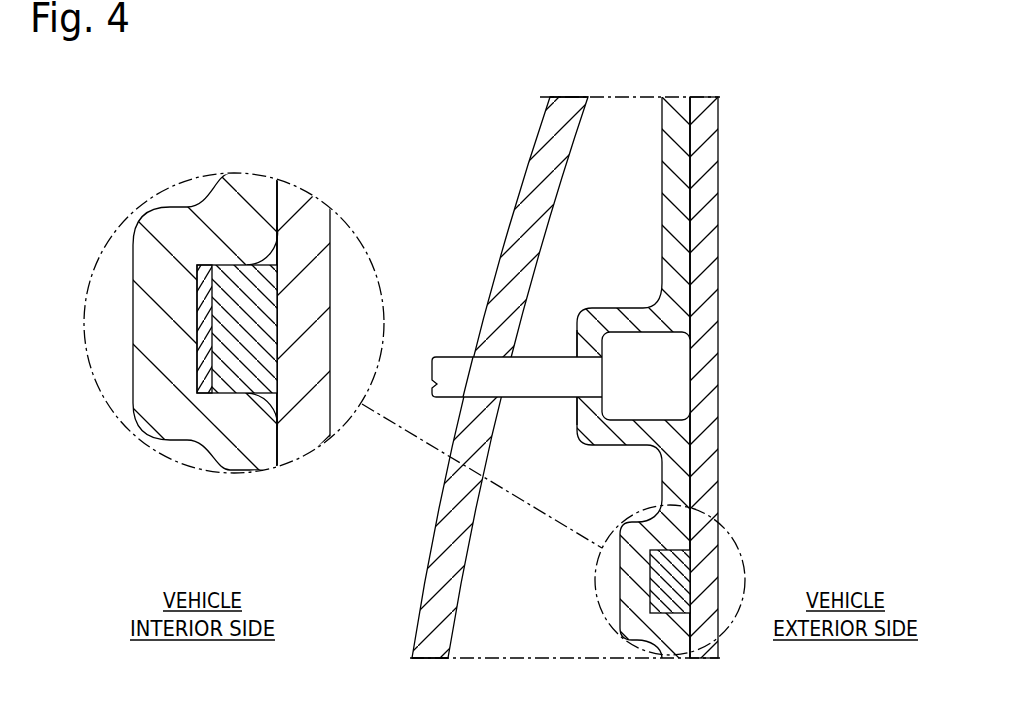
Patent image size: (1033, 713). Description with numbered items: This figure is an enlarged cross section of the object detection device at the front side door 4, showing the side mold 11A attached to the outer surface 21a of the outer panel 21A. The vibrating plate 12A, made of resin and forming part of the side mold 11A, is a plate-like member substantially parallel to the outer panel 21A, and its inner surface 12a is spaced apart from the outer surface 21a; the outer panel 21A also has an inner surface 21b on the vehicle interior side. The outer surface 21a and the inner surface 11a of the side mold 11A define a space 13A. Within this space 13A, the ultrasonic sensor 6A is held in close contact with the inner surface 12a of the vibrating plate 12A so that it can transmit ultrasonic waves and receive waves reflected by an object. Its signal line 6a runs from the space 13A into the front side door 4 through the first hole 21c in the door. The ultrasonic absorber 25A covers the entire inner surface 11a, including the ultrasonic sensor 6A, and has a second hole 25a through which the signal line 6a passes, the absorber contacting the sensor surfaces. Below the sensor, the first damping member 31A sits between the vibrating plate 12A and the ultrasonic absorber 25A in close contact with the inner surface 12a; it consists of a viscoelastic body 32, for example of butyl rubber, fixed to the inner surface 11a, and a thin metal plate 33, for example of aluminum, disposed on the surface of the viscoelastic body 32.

The front side door 4 is at (557, 137).
The outer panel 21A is at (486, 377).
The outer surface 21a is at (580, 113).
The inner surface 21b is at (424, 584).
The first hole 21c is at (486, 370).
The side mold 11A is at (704, 147).
The vibrating plate 12A is at (574, 360).
The inner surface 11a is at (692, 183).
The inner surface 12a is at (572, 377).
The space 13A is at (628, 258).
The ultrasonic absorber 25A is at (677, 118).
The second hole 25a is at (573, 378).
The ultrasonic sensor 6A is at (702, 357).
The signal line 6a is at (462, 357).
The first damping member 31A is at (417, 367).
The viscoelastic body 32 is at (228, 388).
The thin metal plate 33 is at (200, 388).